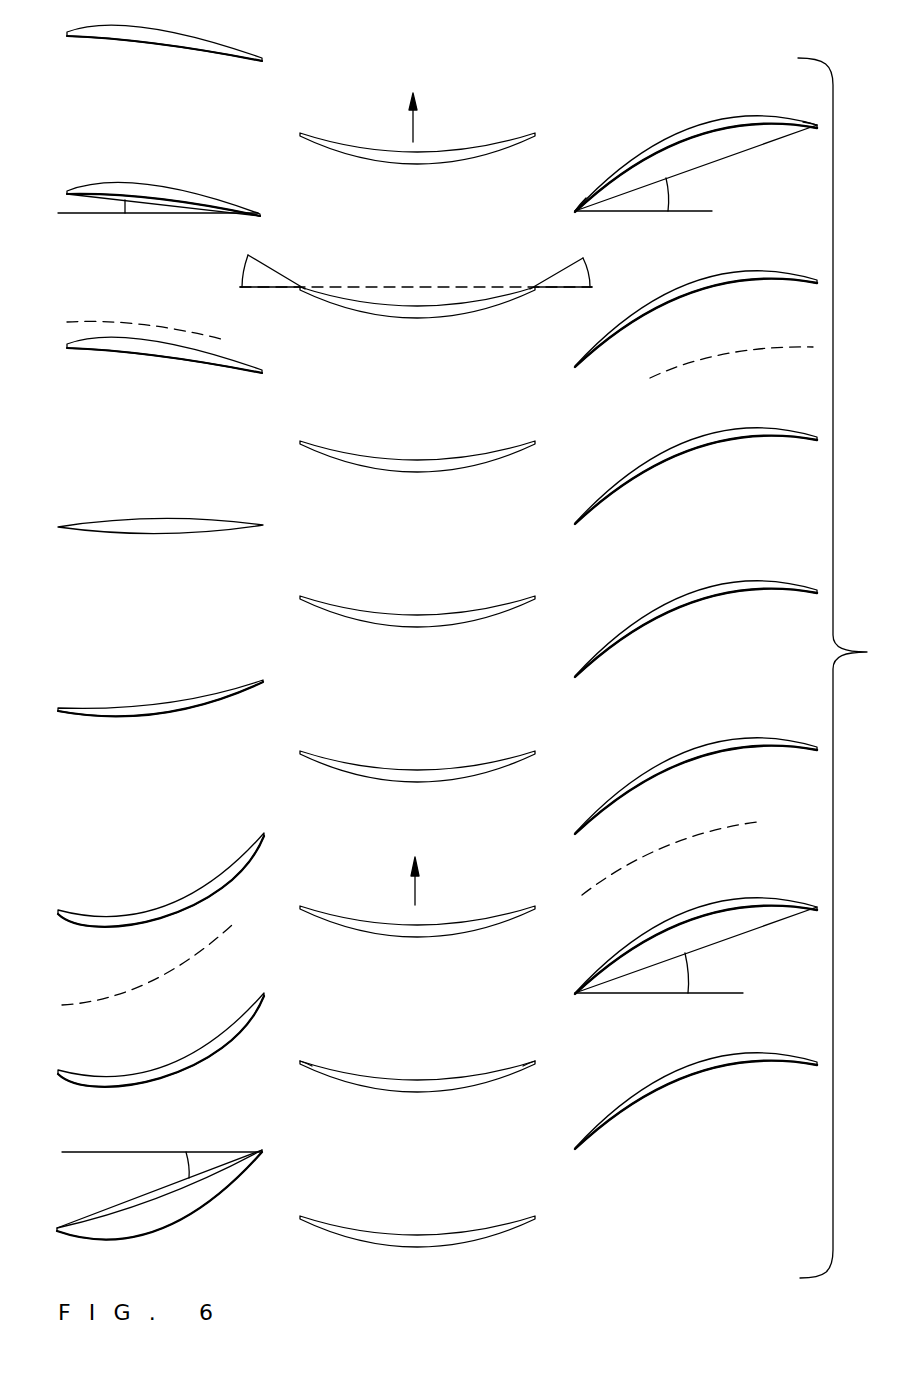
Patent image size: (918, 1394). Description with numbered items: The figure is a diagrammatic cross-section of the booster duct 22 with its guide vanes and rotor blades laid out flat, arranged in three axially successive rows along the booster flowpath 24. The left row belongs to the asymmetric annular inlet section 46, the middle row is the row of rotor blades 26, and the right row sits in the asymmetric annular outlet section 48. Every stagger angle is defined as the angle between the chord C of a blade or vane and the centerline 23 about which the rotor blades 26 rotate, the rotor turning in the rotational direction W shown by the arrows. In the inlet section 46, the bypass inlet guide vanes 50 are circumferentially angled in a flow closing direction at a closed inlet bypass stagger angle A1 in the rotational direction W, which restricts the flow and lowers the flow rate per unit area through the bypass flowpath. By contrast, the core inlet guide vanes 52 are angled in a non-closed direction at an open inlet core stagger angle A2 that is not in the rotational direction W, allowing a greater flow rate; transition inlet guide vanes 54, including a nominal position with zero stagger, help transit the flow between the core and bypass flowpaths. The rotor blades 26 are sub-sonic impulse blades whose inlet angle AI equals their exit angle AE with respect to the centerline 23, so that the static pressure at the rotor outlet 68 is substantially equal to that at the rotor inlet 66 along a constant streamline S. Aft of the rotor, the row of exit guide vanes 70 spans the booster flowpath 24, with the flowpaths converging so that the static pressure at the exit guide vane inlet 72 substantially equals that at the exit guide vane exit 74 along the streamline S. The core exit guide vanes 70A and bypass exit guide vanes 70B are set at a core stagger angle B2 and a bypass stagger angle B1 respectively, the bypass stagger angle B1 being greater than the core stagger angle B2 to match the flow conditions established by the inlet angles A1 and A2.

The booster duct 22 is at (690, 212).
The centerline 23 is at (73, 217).
The booster flowpath 24 is at (426, 1289).
The rotor blades 26 is at (462, 612).
The inlet section 46 is at (156, 1274).
The outlet section 48 is at (728, 1264).
The bypass inlet guide vanes 50 is at (172, 1218).
The core inlet guide vanes 52 is at (148, 182).
The transition inlet guide vanes 54 is at (110, 518).
The rotor inlet 66 is at (282, 1042).
The rotor outlet 68 is at (560, 1038).
The exit guide vanes 70 is at (712, 88).
The core exit guide vanes 70A is at (697, 297).
The bypass exit guide vanes 70B is at (673, 1078).
The exit guide vane inlet 72 is at (565, 213).
The exit guide vane exit 74 is at (823, 128).
The inlet bypass stagger angle A1 is at (186, 1164).
The inlet core stagger angle A2 is at (115, 210).
The bypass stagger angle B1 is at (688, 970).
The core stagger angle B2 is at (672, 192).
The inlet angle AI is at (243, 273).
The exit angle AE is at (587, 268).
The chord C is at (110, 197).
The streamline S is at (127, 317).
The rotational direction W is at (417, 893).